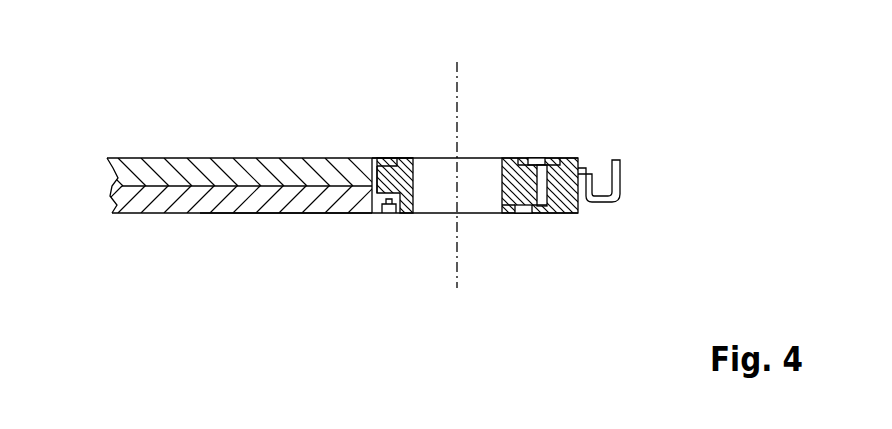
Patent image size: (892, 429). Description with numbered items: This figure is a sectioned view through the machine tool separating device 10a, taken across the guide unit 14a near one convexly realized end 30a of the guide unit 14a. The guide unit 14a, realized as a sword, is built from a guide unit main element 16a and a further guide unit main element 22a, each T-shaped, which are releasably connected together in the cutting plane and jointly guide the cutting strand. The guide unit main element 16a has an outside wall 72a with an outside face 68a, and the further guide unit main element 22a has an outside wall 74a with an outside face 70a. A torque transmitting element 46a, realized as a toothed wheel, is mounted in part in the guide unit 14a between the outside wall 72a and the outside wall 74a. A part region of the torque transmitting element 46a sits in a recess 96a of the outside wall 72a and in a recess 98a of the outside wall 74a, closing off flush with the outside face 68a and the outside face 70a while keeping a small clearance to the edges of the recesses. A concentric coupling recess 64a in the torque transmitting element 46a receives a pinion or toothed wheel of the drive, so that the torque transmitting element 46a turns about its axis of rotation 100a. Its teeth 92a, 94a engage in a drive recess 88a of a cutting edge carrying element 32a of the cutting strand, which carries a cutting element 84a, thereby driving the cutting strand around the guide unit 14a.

The machine tool separating device 10a is at (612, 78).
The guide unit 14a is at (137, 215).
The guide unit main element 16a is at (187, 215).
The further guide unit main element 22a is at (163, 158).
The convexly realized end 30a is at (652, 251).
The cutting edge carrying element 32a is at (563, 208).
The torque transmitting element 46a is at (400, 212).
The coupling recess 64a is at (475, 213).
The outside face 68a is at (292, 220).
The outside face 70a is at (283, 152).
The outside wall 72a is at (245, 215).
The outside wall 74a is at (208, 158).
The cutting element 84a is at (620, 188).
The drive recess 88a is at (545, 157).
The tooth 92a is at (377, 213).
The tooth 94a is at (506, 207).
The recess 96a is at (395, 213).
The recess 98a is at (395, 157).
The axis of rotation 100a is at (458, 76).